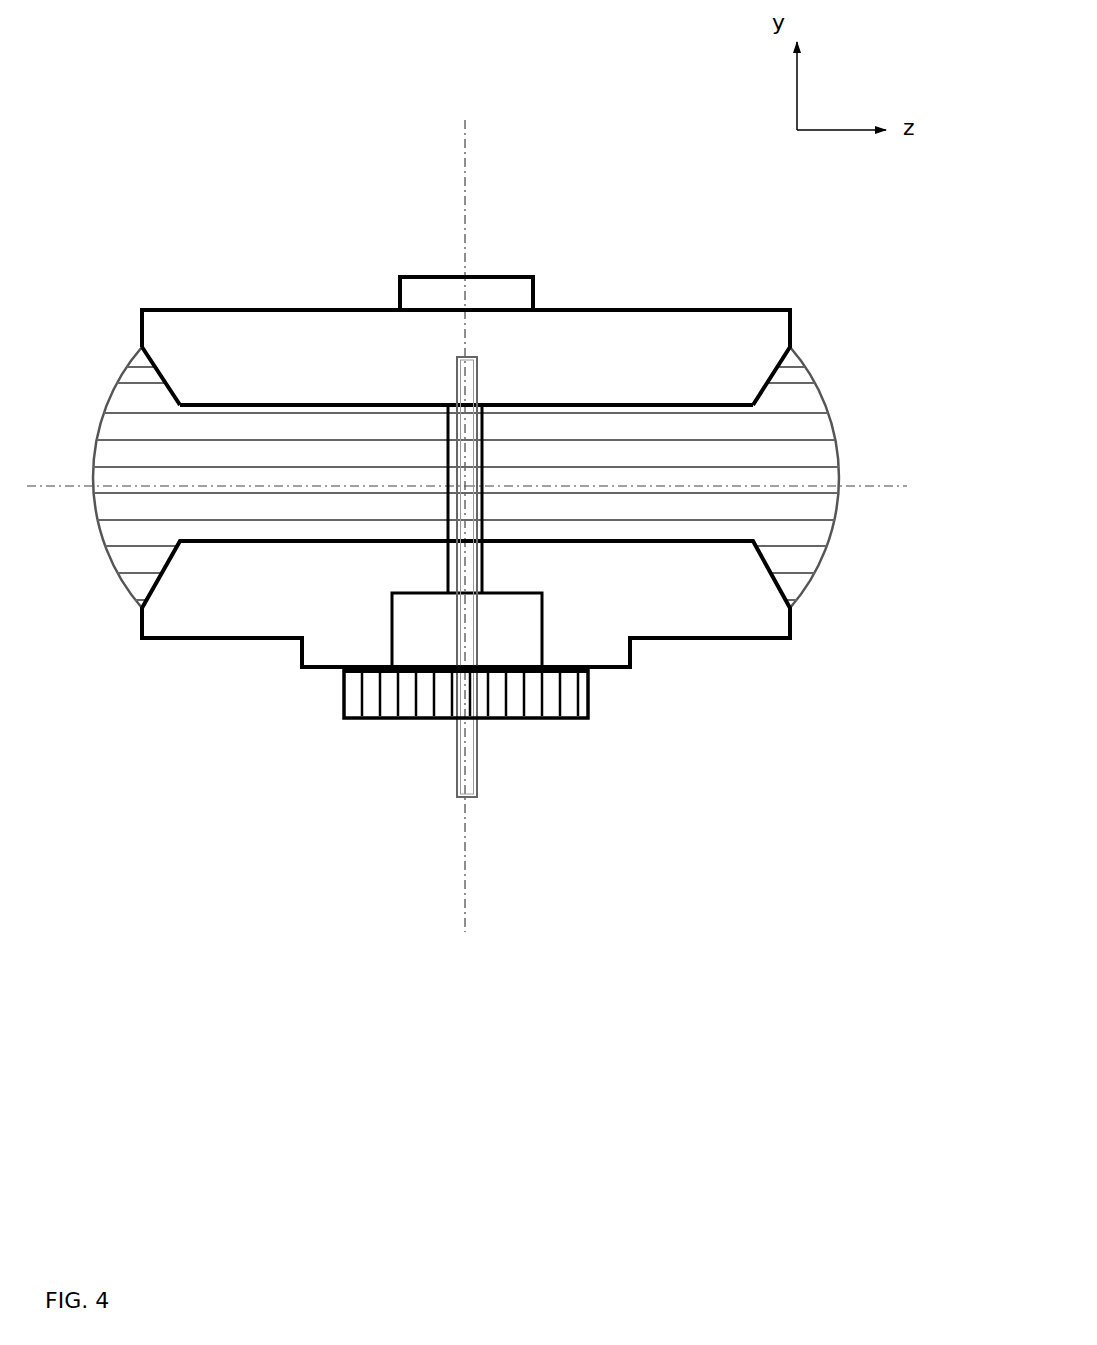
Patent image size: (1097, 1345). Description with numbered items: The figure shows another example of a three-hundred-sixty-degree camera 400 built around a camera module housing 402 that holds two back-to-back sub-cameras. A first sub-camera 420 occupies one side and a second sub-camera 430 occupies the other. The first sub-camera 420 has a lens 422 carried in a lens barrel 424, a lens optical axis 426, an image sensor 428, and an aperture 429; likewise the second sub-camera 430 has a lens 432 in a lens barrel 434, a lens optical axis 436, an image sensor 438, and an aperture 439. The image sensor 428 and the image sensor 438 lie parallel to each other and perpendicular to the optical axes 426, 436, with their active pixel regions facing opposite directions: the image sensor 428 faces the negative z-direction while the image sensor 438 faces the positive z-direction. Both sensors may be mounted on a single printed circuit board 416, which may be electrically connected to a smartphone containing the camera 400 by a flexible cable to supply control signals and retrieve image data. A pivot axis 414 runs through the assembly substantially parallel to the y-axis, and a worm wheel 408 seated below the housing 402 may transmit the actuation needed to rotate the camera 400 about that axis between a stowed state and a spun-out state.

The 360-degree camera 400 is at (268, 101).
The camera module housing 402 is at (150, 307).
The worm wheel 408 is at (569, 725).
The pivot axis 414 is at (465, 934).
The printed circuit board 416 is at (486, 628).
The first sub-camera 420 is at (225, 280).
The lens 422 is at (298, 430).
The lens barrel 424 is at (345, 402).
The lens optical axis 426 is at (75, 481).
The image sensor 428 is at (443, 402).
The aperture 429 is at (93, 413).
The second sub-camera 430 is at (755, 292).
The lens 432 is at (620, 428).
The lens barrel 434 is at (707, 402).
The lens optical axis 436 is at (879, 483).
The image sensor 438 is at (487, 402).
The aperture 439 is at (845, 393).